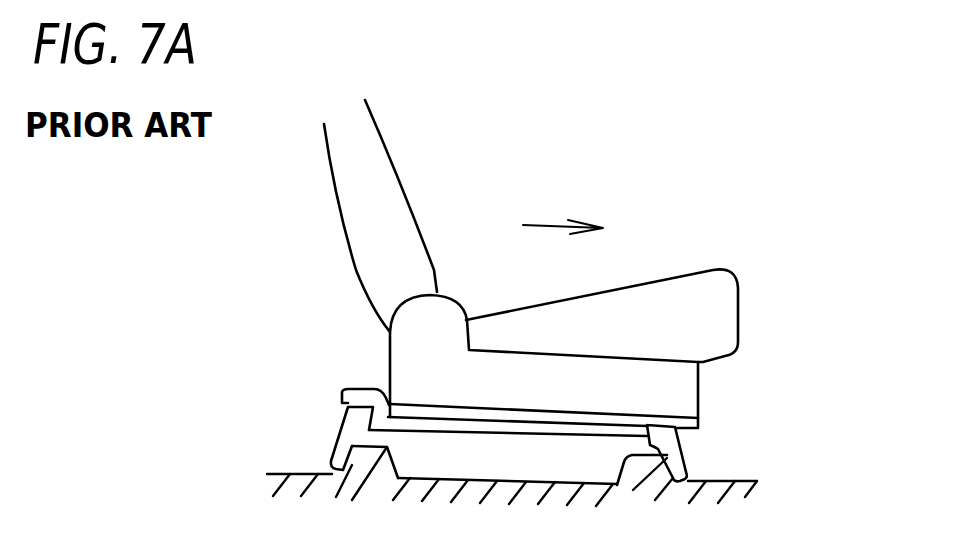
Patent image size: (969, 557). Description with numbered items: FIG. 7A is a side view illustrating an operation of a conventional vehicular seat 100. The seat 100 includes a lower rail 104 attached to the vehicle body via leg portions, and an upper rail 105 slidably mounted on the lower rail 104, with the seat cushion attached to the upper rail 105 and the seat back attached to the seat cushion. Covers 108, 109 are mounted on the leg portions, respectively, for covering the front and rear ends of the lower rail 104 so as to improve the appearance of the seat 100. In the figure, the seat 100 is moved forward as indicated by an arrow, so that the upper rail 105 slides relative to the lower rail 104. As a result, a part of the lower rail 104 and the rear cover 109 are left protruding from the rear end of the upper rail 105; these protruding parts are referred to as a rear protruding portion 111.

The seat 100 is at (703, 190).
The lower rail 104 is at (467, 433).
The upper rail 105 is at (571, 437).
The cover 108 is at (684, 462).
The cover 109 is at (335, 452).
The rear protruding portion 111 is at (363, 390).